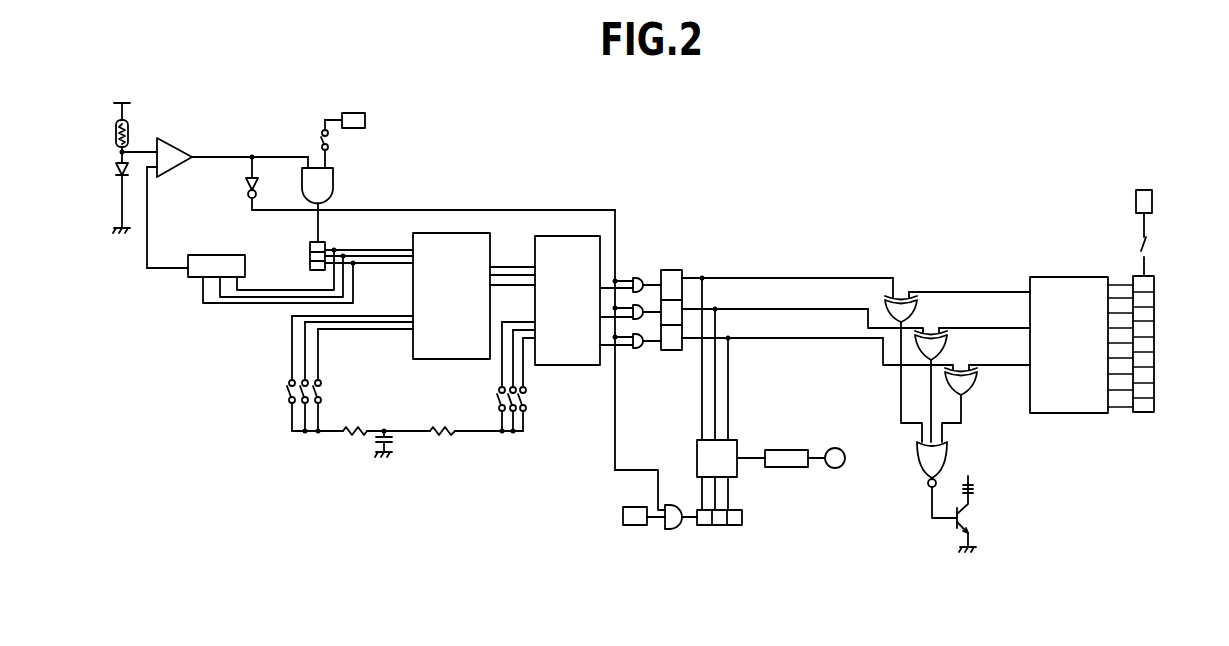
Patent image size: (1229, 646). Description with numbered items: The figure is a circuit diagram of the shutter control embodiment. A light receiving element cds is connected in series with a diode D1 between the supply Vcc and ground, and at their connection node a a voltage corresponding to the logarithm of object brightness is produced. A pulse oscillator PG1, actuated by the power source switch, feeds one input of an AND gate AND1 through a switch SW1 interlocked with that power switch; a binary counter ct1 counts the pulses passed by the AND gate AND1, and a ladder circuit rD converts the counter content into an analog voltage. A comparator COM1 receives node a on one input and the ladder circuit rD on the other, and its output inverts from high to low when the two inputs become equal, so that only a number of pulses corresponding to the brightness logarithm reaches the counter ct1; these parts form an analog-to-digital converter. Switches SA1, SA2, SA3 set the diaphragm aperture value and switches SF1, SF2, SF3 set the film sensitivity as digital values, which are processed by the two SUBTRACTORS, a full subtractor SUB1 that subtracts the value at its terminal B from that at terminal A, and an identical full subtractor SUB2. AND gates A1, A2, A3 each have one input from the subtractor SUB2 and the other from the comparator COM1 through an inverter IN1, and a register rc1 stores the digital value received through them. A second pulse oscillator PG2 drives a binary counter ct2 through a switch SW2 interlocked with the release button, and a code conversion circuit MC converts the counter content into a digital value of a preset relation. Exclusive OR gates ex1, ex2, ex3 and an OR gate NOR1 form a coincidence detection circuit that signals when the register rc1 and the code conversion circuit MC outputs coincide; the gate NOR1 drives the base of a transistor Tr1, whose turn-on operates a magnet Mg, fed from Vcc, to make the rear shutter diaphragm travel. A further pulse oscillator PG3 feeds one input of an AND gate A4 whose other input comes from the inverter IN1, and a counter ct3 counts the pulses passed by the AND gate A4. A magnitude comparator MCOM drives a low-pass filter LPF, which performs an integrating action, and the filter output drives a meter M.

The supply voltage Vcc is at (543, 282).
The light receiving element cds is at (128, 125).
The connection node a is at (139, 144).
The diode D1 is at (116, 167).
The comparator COM1 is at (172, 165).
The inverter IN1 is at (257, 185).
The pulse oscillator PG1 is at (349, 113).
The switch SW1 is at (331, 141).
The AND gate AND1 is at (335, 185).
The binary counter ct1 is at (325, 245).
The ladder circuit rD is at (240, 260).
The full subtractor SUB1 is at (460, 234).
The full subtractor SUB2 is at (575, 238).
The subtractors SUBTRACTORS is at (555, 250).
The switch SA1 is at (288, 391).
The switch SA2 is at (303, 392).
The switch SA3 is at (320, 393).
The switch SF1 is at (498, 403).
The switch SF2 is at (526, 392).
The switch SF3 is at (526, 407).
The AND gate A1 is at (636, 278).
The AND gate A2 is at (643, 305).
The AND gate A3 is at (637, 349).
The AND gate A4 is at (671, 530).
The register rc1 is at (680, 272).
The magnitude comparator MCOM is at (733, 446).
The low-pass filter LPF is at (786, 462).
The meter M is at (838, 466).
The OR gate NOR1 is at (918, 452).
The magnet Mg is at (975, 489).
The transistor Tr1 is at (966, 517).
The pulse oscillator PG3 is at (624, 526).
The counter ct3 is at (718, 526).
The exclusive OR gate ex1 is at (910, 315).
The exclusive OR gate ex2 is at (940, 351).
The exclusive OR gate ex3 is at (969, 391).
The code conversion circuit MC is at (1072, 400).
The binary counter ct2 is at (1144, 413).
The pulse oscillator PG2 is at (1153, 203).
The switch SW2 is at (1148, 250).